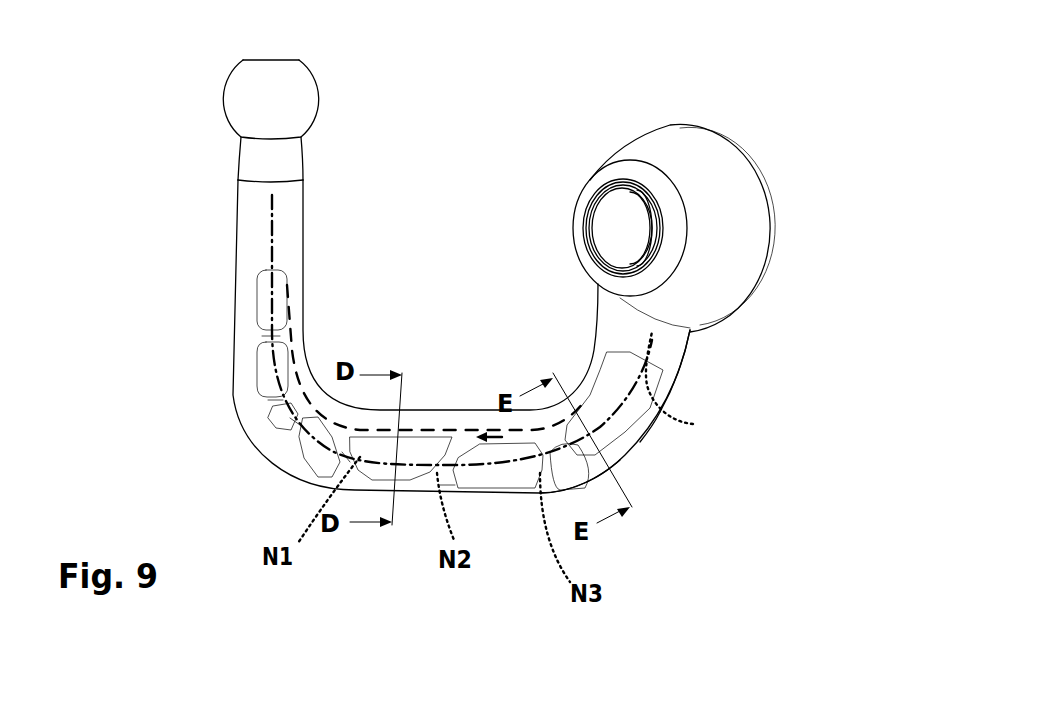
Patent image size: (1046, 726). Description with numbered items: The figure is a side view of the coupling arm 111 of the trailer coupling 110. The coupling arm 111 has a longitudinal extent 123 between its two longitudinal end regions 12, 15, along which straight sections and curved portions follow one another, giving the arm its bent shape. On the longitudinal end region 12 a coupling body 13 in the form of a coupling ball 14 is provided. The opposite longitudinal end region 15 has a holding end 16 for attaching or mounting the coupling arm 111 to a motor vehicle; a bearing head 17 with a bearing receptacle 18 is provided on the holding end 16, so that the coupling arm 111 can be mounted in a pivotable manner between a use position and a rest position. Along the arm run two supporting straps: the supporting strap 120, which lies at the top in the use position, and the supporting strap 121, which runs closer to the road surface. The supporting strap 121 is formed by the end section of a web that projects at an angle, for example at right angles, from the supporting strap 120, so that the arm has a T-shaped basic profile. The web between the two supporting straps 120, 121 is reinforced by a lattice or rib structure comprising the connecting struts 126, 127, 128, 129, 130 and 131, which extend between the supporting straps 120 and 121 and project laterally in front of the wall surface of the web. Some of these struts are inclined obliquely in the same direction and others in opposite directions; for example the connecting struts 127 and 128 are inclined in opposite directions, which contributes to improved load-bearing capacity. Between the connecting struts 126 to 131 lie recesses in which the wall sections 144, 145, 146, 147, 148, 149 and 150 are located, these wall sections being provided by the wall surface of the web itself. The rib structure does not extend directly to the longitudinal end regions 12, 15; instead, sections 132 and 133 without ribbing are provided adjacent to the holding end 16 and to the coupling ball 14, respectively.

The trailer coupling 110 is at (820, 130).
The coupling body 13 is at (232, 75).
The coupling ball 14 is at (228, 115).
The longitudinal end region 12 is at (303, 165).
The section without ribbing 133 is at (288, 225).
The supporting strap 120 is at (460, 432).
The longitudinal extent 123 is at (691, 387).
The wall section 150 is at (265, 292).
The connecting strut 131 is at (265, 337).
The wall section 149 is at (265, 367).
The connecting strut 130 is at (275, 410).
The wall section 148 is at (275, 420).
The connecting strut 129 is at (293, 427).
The wall section 147 is at (313, 450).
The connecting strut 128 is at (350, 455).
The wall section 146 is at (420, 468).
The connecting strut 127 is at (437, 487).
The wall section 145 is at (528, 468).
The connecting strut 126 is at (553, 450).
The wall section 144 is at (633, 417).
The supporting strap 121 is at (627, 447).
The longitudinal end region 15 is at (682, 342).
The coupling arm 111 is at (686, 369).
The holding end 16 is at (732, 120).
The bearing head 17 is at (781, 223).
The bearing receptacle 18 is at (615, 220).
The section without ribbing 132 is at (622, 325).